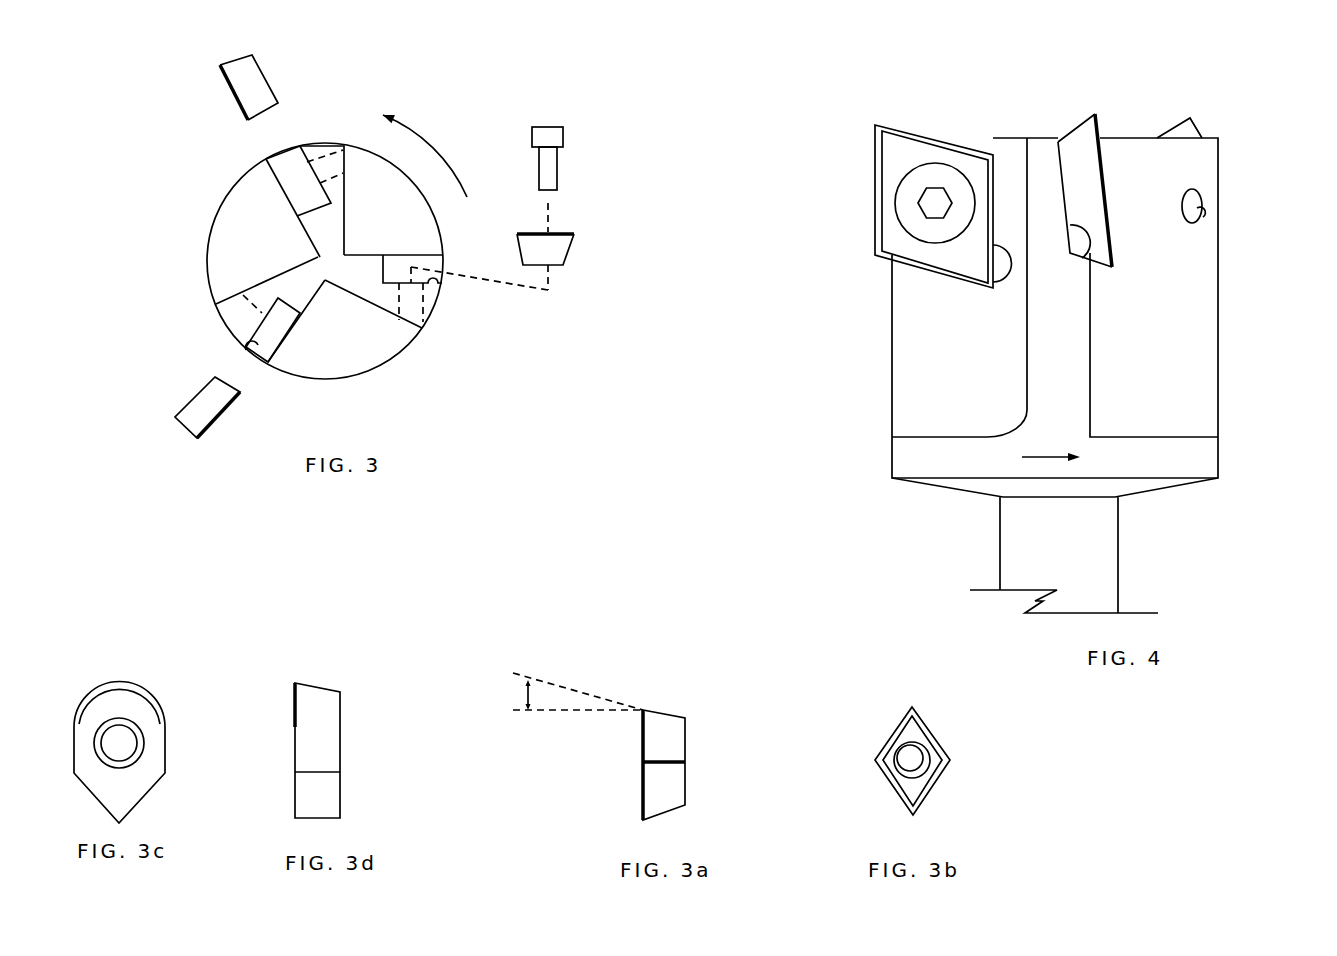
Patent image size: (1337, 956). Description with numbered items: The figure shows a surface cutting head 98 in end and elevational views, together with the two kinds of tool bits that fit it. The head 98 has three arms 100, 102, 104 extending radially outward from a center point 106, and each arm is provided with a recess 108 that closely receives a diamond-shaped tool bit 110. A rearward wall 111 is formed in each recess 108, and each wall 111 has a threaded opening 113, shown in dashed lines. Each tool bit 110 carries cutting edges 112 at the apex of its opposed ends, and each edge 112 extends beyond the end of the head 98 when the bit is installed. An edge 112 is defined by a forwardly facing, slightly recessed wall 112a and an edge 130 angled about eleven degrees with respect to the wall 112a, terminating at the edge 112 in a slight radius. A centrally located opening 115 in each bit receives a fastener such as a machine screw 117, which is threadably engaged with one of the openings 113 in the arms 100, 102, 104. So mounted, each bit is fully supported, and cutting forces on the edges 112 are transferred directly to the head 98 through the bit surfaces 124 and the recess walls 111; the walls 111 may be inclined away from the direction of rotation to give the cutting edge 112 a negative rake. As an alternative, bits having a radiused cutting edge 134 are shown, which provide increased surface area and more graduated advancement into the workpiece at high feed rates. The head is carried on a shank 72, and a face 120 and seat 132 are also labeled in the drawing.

In FIG. 4, the shank 72 is at (1060, 553).
In FIG. 3, the surface cutting head 98 is at (478, 98).
In FIG. 4, the surface cutting head 98 is at (1043, 138).
In FIG. 3, the arm 100 is at (265, 285).
In FIG. 4, the arm 100 is at (1075, 373).
In FIG. 3, the arm 102 is at (322, 143).
In FIG. 4, the arm 102 is at (892, 335).
In FIG. 3, the arm 104 is at (437, 303).
In FIG. 4, the arm 104 is at (1158, 333).
In FIG. 3, the center point 106 is at (328, 268).
In FIG. 3, the recess 108 is at (298, 177).
In FIG. 3, the tool bit 110 is at (277, 62).
In FIG. 4, the tool bit 110 is at (888, 100).
In FIG. 3a, the tool bit 110 is at (613, 787).
In FIG. 3b, the tool bit 110 is at (865, 723).
In FIG. 3, the rearward wall 111 is at (300, 147).
In FIG. 4, the rearward wall 111 is at (1085, 258).
In FIG. 3, the cutting edge 112 is at (220, 65).
In FIG. 4, the cutting edge 112 is at (877, 123).
In FIG. 3a, the cutting edge 112 is at (643, 710).
In FIG. 3b, the cutting edge 112 is at (912, 707).
In FIG. 4, the recessed wall 112a is at (877, 155).
In FIG. 3b, the recessed wall 112a is at (928, 712).
In FIG. 3, the threaded opening 113 is at (240, 317).
In FIG. 4, the threaded opening 113 is at (1203, 217).
In FIG. 3b, the centrally located opening 115 is at (918, 758).
In FIG. 3, the machine screw 117 is at (563, 132).
In FIG. 4, the machine screw 117 is at (924, 163).
In FIG. 3a, the side face 120 is at (685, 718).
In FIG. 3, the bit surface 124 is at (180, 408).
In FIG. 3a, the bit surface 124 is at (685, 804).
In FIG. 3a, the angled edge 130 is at (662, 712).
In FIG. 4, the seat 132 is at (1010, 138).
In FIG. 3c, the radiused cutting edge 134 is at (123, 682).
In FIG. 3d, the radiused cutting edge 134 is at (295, 683).